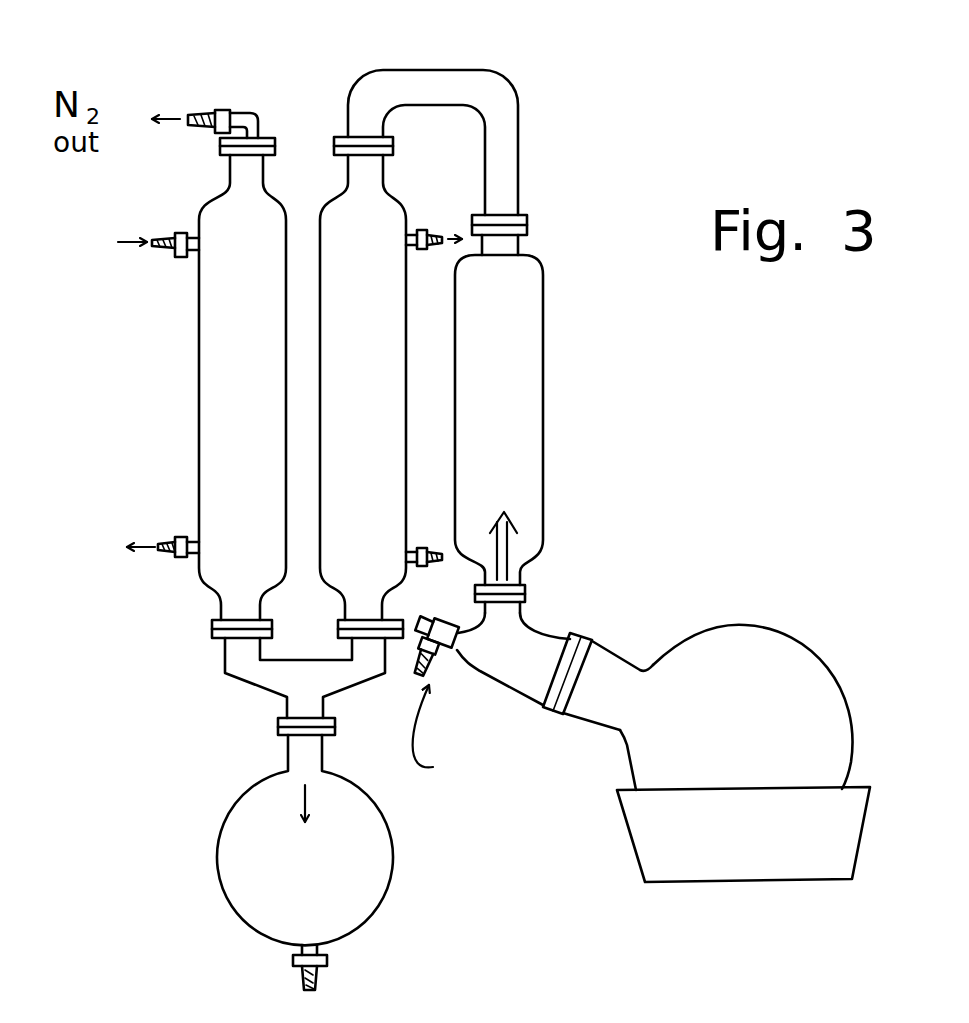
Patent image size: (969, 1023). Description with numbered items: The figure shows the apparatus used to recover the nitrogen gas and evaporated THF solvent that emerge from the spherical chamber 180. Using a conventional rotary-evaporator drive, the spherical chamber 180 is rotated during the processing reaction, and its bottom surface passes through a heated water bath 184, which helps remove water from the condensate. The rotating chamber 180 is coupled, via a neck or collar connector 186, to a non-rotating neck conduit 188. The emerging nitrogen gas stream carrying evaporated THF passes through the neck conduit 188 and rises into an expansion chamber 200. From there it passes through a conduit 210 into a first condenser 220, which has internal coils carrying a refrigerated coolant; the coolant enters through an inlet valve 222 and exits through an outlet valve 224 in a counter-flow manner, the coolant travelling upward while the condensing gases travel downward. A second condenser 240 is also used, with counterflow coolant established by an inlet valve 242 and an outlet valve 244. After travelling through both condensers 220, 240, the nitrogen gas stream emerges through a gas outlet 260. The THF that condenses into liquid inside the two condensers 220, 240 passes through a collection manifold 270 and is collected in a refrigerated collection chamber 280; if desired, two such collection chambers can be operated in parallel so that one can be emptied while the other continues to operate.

The spherical chamber 180 is at (803, 634).
The heated water bath 184 is at (631, 859).
The neck or collar connector 186 is at (594, 631).
The neck conduit 188 is at (551, 636).
The expansion chamber 200 is at (551, 398).
The conduit 210 is at (523, 165).
The first condenser 220 is at (323, 195).
The inlet valve 222 is at (431, 536).
The outlet valve 224 is at (438, 253).
The second condenser 240 is at (196, 417).
The inlet valve 242 is at (177, 190).
The outlet valve 244 is at (180, 560).
The gas outlet 260 is at (231, 110).
The collection manifold 270 is at (257, 689).
The refrigerated collection chamber 280 is at (238, 918).